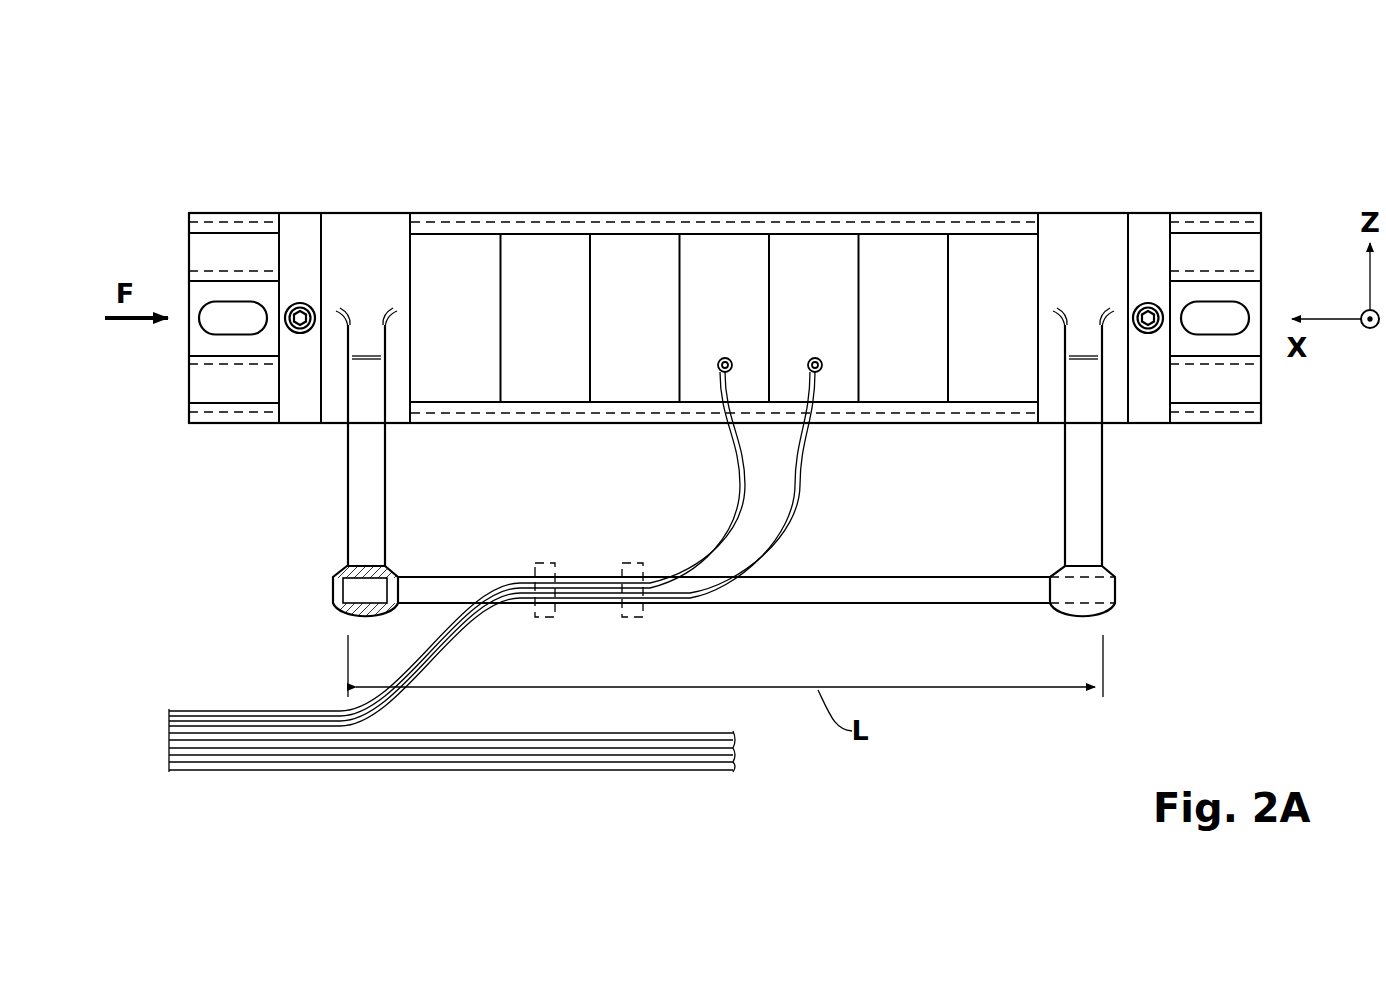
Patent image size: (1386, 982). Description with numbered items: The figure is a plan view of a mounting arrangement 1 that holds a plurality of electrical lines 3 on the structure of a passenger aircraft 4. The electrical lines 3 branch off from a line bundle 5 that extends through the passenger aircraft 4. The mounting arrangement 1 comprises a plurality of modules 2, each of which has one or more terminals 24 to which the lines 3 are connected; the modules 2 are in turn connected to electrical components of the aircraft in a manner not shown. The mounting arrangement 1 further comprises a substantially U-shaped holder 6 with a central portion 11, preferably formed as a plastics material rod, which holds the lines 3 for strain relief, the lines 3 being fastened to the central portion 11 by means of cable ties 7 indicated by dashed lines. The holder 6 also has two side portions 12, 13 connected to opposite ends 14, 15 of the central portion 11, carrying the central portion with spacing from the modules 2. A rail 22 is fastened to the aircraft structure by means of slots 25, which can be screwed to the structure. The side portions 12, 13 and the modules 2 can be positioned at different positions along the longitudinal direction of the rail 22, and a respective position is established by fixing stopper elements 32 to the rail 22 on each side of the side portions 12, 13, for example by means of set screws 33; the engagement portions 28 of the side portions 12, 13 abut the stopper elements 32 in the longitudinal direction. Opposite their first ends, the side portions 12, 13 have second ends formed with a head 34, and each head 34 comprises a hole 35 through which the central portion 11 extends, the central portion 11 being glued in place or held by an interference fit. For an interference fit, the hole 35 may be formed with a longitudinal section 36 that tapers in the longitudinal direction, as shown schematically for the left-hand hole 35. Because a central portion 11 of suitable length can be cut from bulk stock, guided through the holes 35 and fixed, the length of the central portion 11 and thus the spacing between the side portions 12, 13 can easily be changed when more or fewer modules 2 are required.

The mounting arrangement 1 is at (180, 158).
The modules 2 is at (448, 243).
The electrical lines 3 is at (742, 482).
The passenger aircraft 4 is at (778, 73).
The line bundle 5 is at (212, 703).
The holder 6 is at (340, 505).
The cable ties 7 is at (545, 617).
The central portion 11 is at (350, 590).
The first side portion 12 is at (380, 451).
The second side portion 13 is at (1073, 452).
The first end of central portion 14 is at (425, 575).
The second end of central portion 15 is at (1027, 577).
The rail 22 is at (232, 218).
The terminals 24 is at (718, 367).
The slots 25 is at (213, 309).
The engagement portions 28 is at (362, 225).
The stopper elements 32 is at (298, 225).
The set screws 33 is at (299, 332).
The head 34 is at (348, 613).
The hole 35 is at (335, 597).
The longitudinal section 36 is at (370, 575).